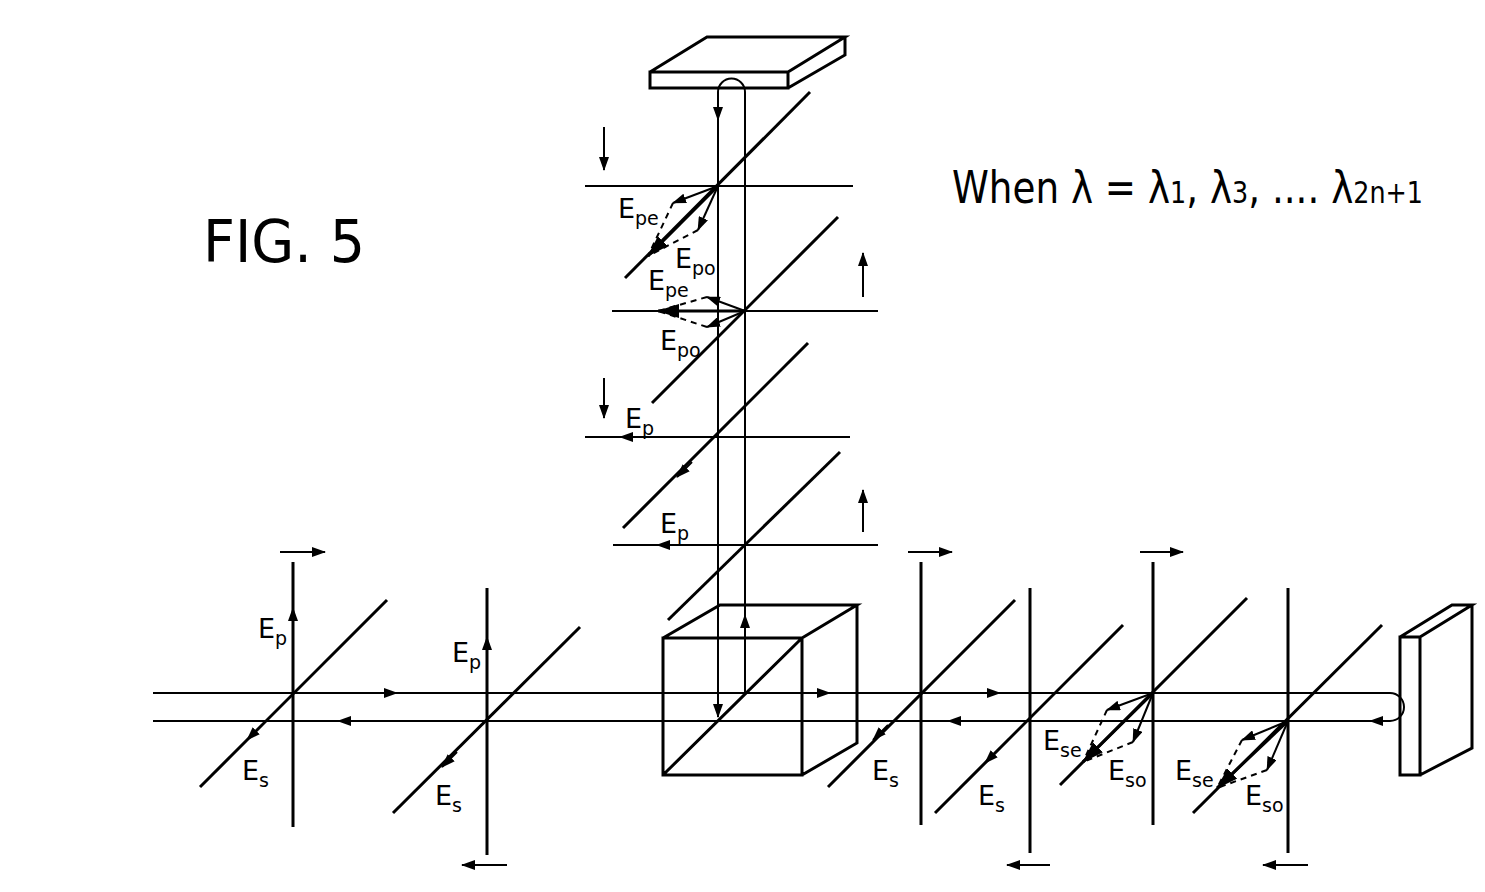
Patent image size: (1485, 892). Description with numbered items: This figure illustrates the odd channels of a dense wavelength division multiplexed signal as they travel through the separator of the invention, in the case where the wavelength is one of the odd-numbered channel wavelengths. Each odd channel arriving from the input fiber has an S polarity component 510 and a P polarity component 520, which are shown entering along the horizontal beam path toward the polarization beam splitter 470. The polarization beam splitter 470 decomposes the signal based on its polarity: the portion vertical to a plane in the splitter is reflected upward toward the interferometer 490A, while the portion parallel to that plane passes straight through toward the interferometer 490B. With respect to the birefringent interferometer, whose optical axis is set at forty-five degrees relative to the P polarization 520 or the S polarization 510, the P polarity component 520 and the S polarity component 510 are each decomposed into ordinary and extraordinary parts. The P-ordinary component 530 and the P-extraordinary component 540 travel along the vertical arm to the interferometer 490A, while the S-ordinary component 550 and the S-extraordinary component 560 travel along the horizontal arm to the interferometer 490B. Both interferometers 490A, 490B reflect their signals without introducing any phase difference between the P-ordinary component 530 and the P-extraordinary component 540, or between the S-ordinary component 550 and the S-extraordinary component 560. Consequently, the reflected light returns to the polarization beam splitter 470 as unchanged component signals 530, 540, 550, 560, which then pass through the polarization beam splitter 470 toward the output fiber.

The polarization beam splitter 470 is at (663, 748).
The interferometer 490A is at (650, 70).
The interferometer 490B is at (1437, 606).
The S polarity component (Es) 510 is at (208, 787).
The P polarity component (Ep) 520 is at (293, 590).
The Epo component 530 is at (728, 198).
The Epe component 540 is at (714, 184).
The Eso component 550 is at (1155, 708).
The Ese component 560 is at (1148, 692).